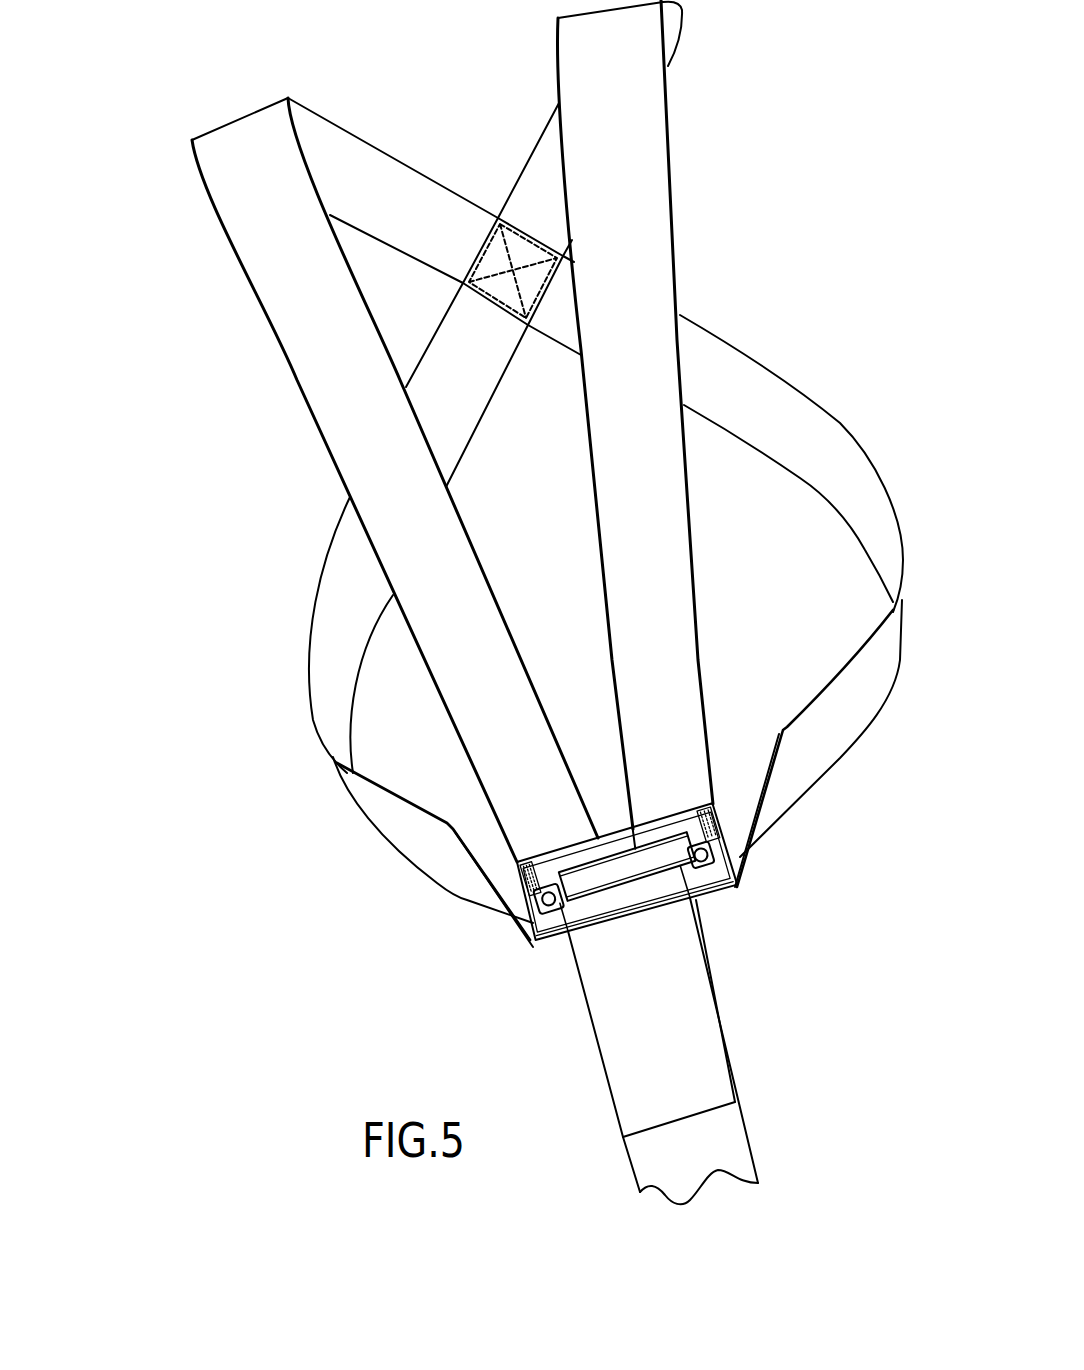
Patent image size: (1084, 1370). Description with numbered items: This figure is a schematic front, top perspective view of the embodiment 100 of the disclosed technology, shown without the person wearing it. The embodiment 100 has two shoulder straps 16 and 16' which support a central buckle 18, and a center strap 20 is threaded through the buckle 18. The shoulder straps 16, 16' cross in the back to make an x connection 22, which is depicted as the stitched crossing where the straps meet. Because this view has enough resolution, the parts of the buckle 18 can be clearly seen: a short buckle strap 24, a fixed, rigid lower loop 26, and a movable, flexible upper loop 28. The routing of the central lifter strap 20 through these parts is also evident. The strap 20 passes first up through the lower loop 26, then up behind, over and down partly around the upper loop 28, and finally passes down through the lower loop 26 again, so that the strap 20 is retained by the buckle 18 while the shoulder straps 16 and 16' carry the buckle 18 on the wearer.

The embodiment 100 is at (765, 83).
The shoulder strap 16 is at (495, 515).
The shoulder strap 16' is at (447, 431).
The central buckle 18 is at (475, 963).
The center strap 20 is at (613, 853).
The x connection 22 is at (500, 297).
The short buckle strap 24 is at (547, 947).
The lower loop 26 is at (638, 868).
The upper loop 28 is at (708, 800).